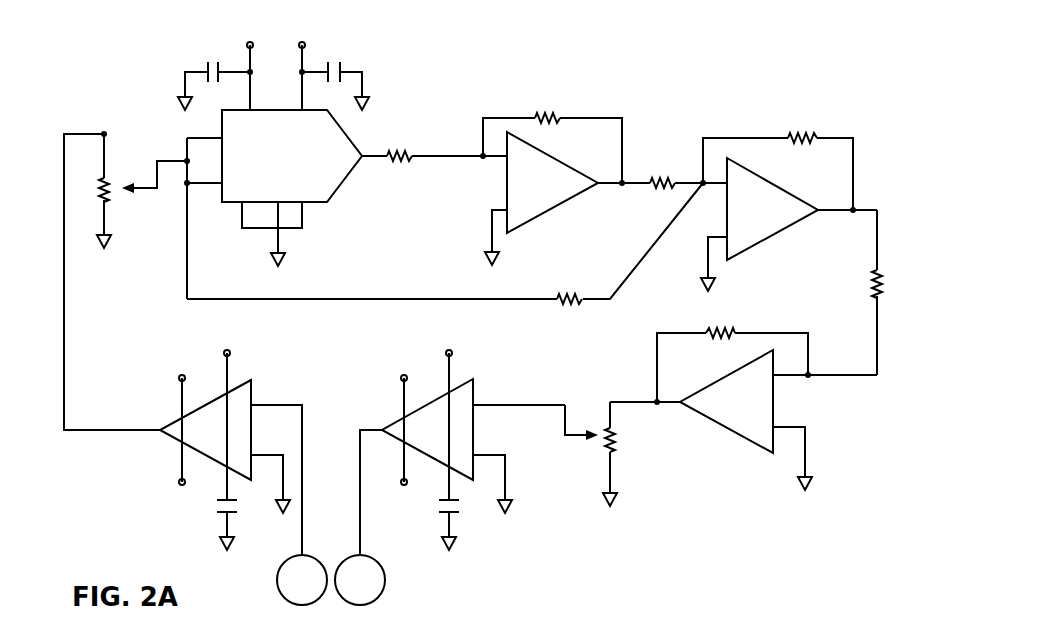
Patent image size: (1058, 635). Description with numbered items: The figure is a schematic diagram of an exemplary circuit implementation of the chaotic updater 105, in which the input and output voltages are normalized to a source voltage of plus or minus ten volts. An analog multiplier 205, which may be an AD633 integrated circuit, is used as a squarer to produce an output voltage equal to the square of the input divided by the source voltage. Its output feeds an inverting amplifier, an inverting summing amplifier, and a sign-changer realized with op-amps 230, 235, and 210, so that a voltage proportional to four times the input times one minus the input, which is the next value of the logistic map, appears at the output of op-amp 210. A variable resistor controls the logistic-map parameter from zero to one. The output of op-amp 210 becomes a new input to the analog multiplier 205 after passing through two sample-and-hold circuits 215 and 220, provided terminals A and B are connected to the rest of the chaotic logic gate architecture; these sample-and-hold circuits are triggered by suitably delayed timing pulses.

The chaotic updater 105 is at (729, 71).
The analog multiplier 205 is at (276, 161).
The op-amp 230 is at (554, 176).
The op-amp 235 is at (806, 199).
The op-amp 210 is at (743, 397).
The sample-and-hold circuit 220 is at (243, 467).
The sample-and-hold circuit 215 is at (450, 467).